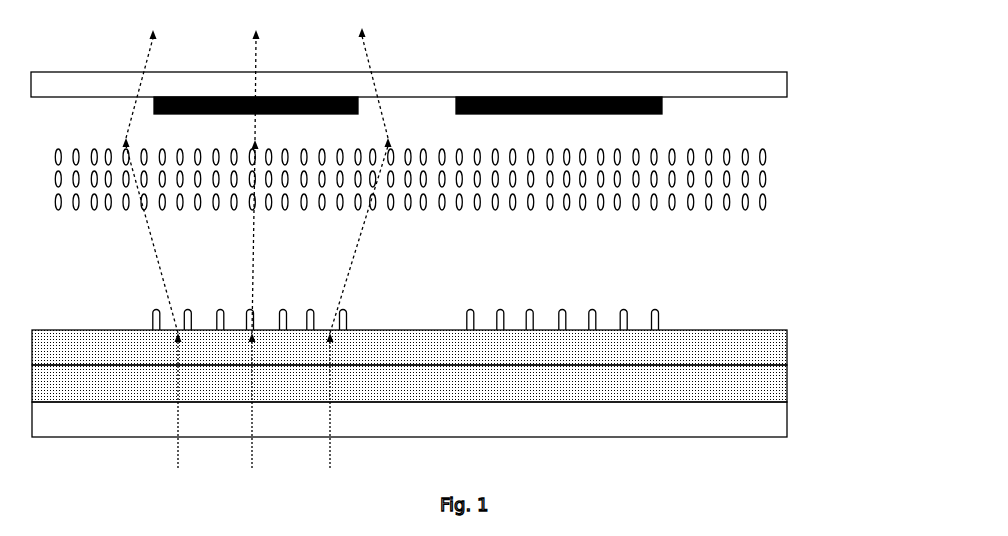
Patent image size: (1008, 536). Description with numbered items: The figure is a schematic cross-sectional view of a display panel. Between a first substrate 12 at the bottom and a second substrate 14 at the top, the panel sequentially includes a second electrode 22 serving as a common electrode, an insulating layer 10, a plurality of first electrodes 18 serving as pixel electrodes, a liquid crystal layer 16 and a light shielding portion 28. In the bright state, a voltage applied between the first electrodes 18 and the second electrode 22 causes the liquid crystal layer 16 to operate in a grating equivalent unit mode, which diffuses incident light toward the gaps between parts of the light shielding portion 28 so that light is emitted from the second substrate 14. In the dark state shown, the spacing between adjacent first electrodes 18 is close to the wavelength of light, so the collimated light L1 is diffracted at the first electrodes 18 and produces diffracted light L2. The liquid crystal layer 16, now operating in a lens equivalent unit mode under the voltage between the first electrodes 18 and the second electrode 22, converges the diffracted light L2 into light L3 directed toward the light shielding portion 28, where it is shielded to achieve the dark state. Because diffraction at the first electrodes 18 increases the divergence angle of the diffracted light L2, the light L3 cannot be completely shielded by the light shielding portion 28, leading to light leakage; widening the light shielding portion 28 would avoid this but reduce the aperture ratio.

The insulating layer 10 is at (787, 347).
The first substrate 12 is at (787, 418).
The second substrate 14 is at (787, 85).
The liquid crystal layer 16 is at (787, 183).
The first electrodes 18 is at (473, 310).
The second electrode 22 is at (787, 383).
The light shielding portion 28 is at (575, 97).
The collimated light L1 is at (238, 400).
The diffracted light L2 is at (254, 235).
The light L3 is at (247, 84).